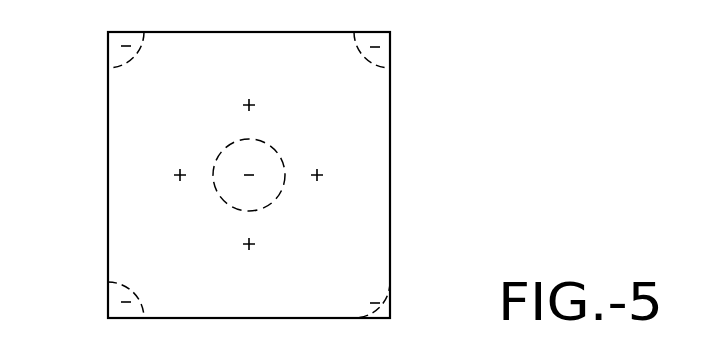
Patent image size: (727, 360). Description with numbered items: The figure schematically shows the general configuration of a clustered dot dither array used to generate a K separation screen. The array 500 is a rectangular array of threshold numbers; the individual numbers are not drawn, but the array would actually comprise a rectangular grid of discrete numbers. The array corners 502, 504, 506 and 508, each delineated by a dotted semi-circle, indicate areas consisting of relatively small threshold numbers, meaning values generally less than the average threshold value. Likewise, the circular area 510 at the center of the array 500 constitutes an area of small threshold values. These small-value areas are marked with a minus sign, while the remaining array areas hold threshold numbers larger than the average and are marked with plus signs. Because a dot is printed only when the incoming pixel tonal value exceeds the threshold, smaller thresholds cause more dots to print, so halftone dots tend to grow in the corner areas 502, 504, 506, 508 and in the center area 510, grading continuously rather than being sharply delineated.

The array 500 is at (391, 147).
The array corner 502 is at (108, 57).
The array corner 504 is at (392, 57).
The array corner 506 is at (108, 292).
The array corner 508 is at (392, 293).
The circular area 510 is at (263, 163).